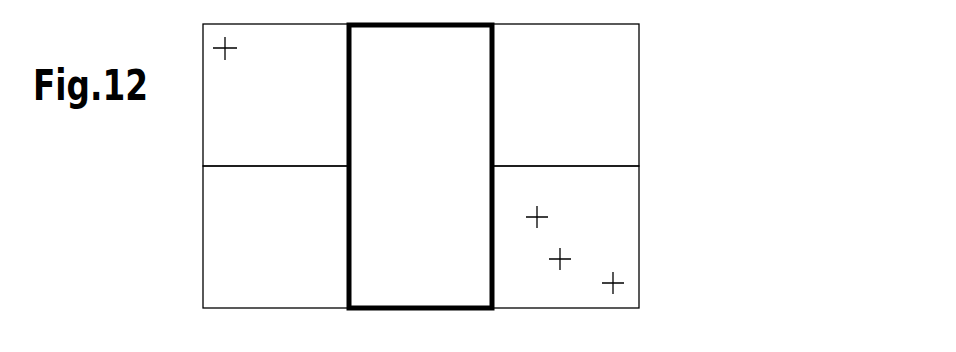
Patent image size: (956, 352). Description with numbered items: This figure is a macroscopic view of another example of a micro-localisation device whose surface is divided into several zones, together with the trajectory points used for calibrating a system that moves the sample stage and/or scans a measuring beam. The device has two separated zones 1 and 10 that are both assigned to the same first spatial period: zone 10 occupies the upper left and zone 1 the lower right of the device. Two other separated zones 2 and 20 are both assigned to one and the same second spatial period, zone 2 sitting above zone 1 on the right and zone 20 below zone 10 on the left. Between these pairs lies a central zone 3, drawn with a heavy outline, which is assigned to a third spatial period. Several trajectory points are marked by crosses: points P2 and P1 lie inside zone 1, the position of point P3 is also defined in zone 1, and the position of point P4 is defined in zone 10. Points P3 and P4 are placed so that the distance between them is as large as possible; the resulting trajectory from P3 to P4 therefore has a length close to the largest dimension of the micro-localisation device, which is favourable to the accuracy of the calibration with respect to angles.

The separated zone 10 is at (251, 150).
The separated zone 20 is at (258, 293).
The zone 3 is at (389, 290).
The separated zone 2 is at (530, 146).
The separated zone 1 is at (529, 295).
The point P1 is at (570, 243).
The point P2 is at (538, 202).
The point P3 is at (617, 267).
The point P4 is at (238, 58).